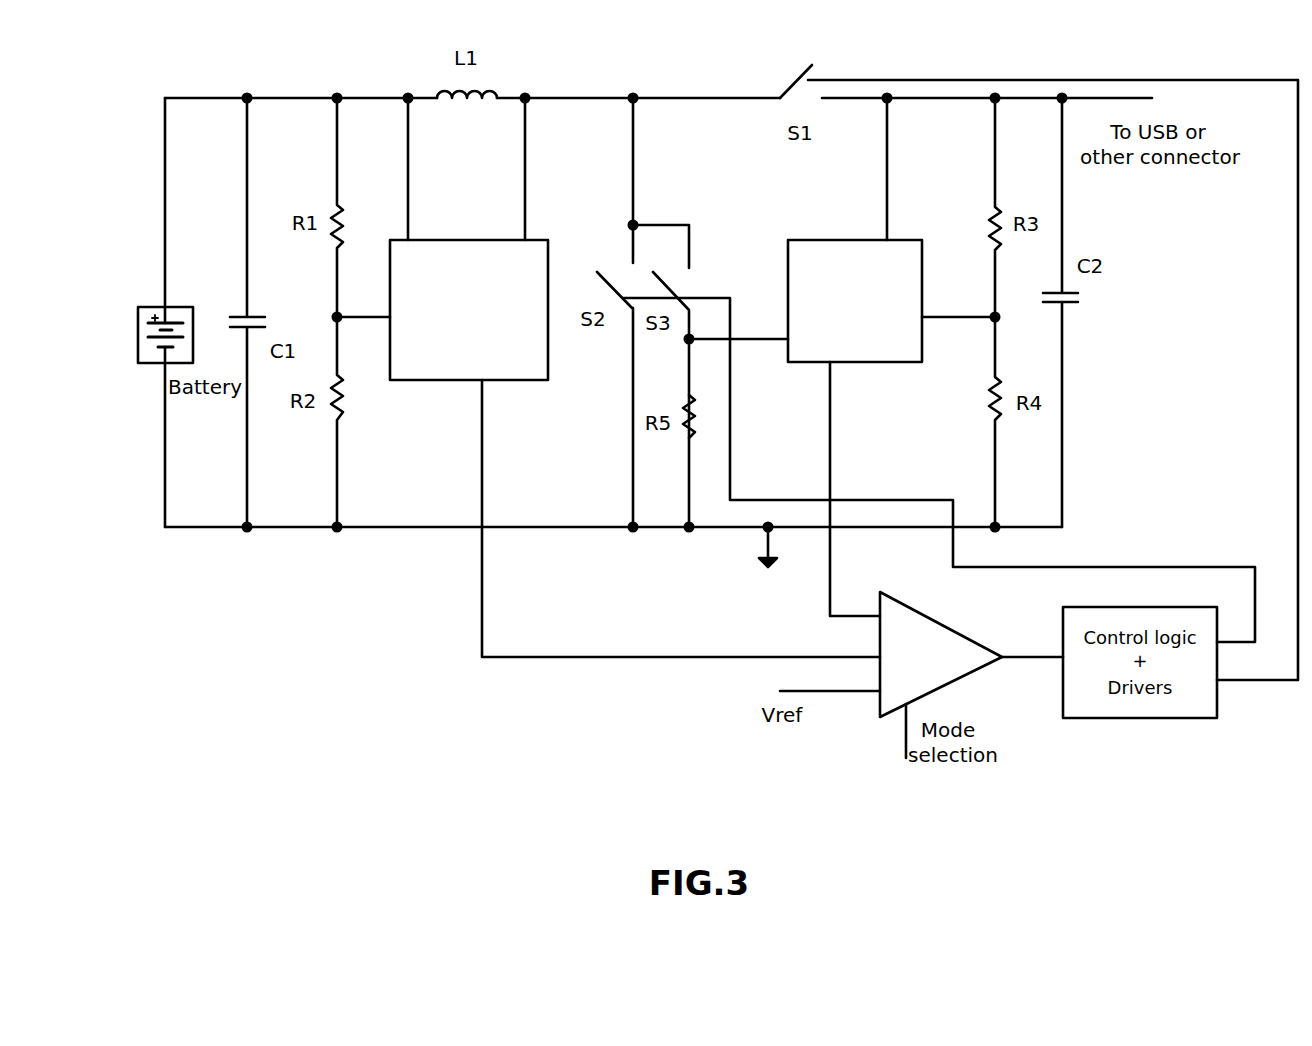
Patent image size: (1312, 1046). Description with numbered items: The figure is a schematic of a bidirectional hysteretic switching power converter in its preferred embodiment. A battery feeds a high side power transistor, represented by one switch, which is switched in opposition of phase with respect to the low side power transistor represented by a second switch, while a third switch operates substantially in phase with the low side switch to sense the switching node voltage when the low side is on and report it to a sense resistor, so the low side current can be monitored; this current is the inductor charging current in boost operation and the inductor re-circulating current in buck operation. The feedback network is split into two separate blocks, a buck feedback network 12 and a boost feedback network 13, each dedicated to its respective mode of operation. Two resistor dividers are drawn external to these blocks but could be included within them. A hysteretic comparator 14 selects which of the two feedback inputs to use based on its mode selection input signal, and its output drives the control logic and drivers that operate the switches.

The buck feedback network 12 is at (427, 238).
The boost feedback network 13 is at (797, 238).
The hysteretic comparator 14 is at (945, 622).